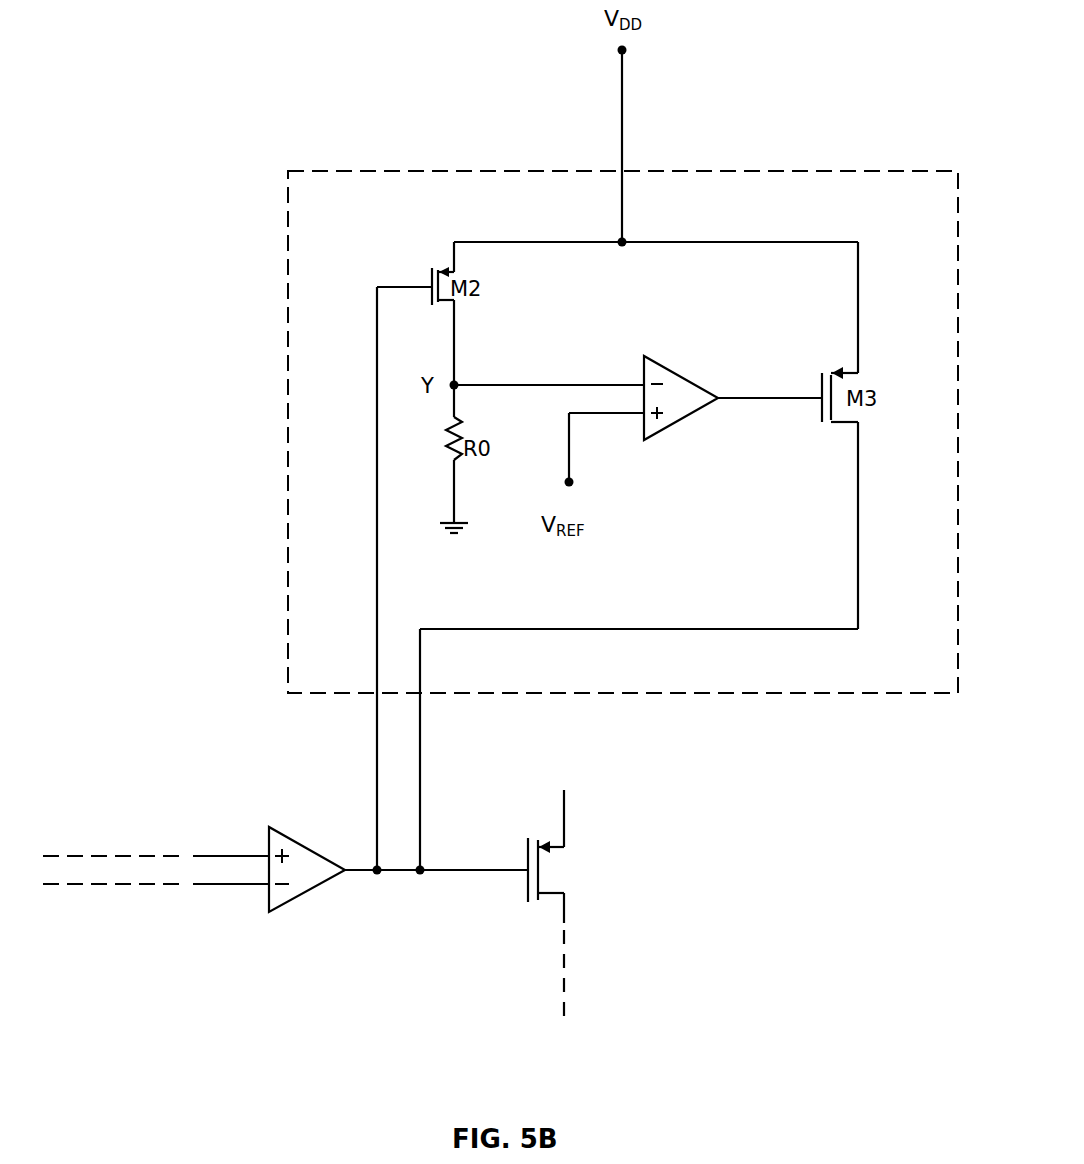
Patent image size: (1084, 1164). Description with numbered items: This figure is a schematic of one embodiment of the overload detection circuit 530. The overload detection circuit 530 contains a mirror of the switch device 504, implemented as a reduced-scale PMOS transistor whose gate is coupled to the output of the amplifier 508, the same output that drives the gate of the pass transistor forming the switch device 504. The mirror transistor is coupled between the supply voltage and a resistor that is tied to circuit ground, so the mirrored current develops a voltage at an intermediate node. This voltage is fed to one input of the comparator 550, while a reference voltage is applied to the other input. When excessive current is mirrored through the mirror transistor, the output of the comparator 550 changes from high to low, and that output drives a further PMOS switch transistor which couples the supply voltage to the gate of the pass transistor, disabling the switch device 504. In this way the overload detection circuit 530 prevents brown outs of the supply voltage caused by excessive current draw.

The overload detection circuit 530 is at (288, 170).
The comparator 550 is at (674, 368).
The amplifier 508 is at (312, 903).
The switch device 504 is at (610, 884).